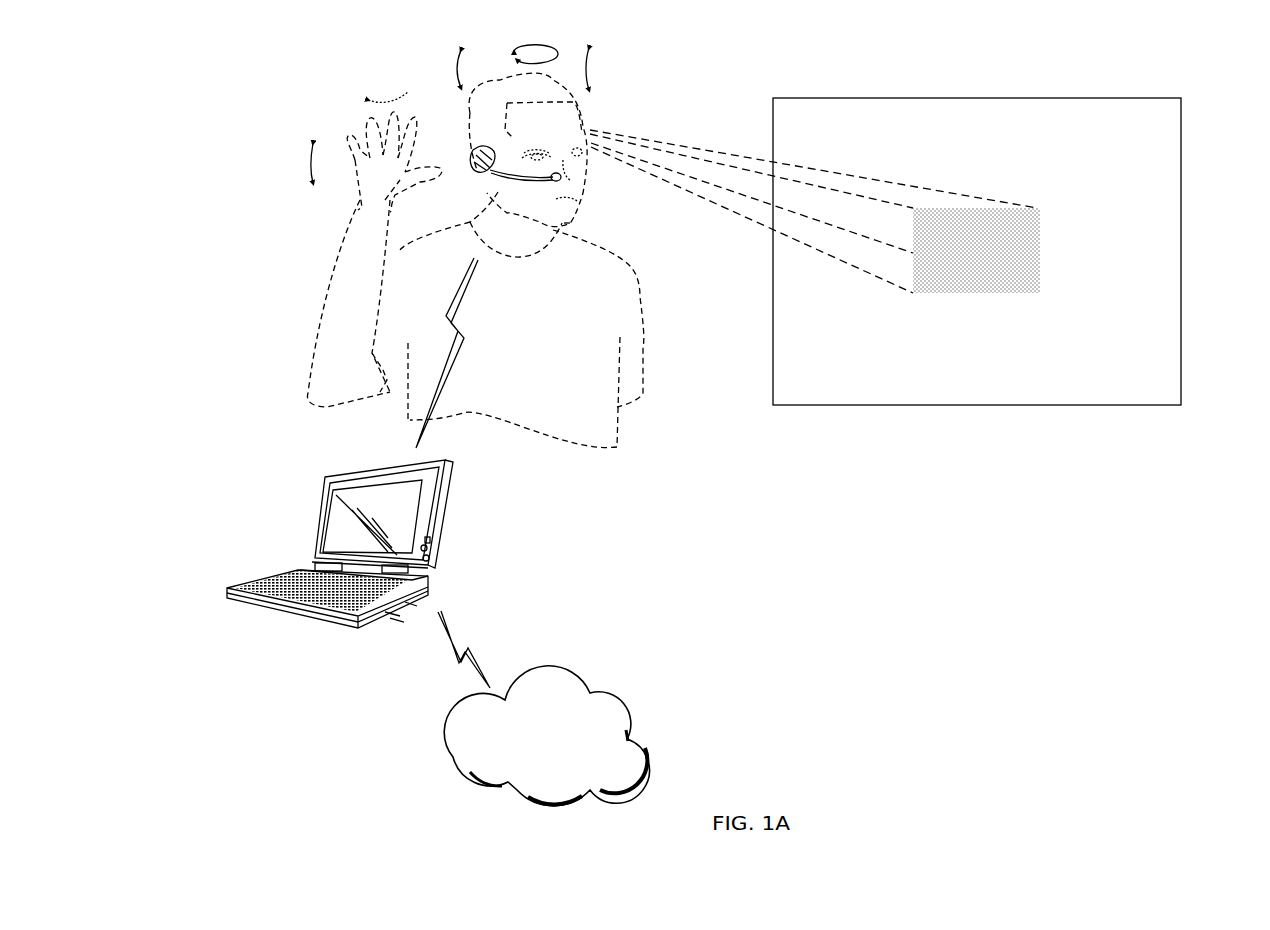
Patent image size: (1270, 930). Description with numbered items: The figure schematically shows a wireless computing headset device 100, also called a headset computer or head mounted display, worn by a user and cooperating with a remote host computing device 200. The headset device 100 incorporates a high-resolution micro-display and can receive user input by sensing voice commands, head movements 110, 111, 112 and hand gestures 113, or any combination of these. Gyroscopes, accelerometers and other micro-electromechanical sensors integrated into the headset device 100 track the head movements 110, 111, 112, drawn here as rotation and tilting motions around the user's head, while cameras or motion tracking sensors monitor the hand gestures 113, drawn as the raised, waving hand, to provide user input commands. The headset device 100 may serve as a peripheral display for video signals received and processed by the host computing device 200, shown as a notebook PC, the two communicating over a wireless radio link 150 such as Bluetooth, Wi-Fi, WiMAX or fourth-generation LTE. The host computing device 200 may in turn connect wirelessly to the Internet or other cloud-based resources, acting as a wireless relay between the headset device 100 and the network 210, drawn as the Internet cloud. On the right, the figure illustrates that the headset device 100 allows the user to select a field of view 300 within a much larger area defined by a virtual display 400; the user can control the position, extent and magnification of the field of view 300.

The wireless computing headset device 100 is at (502, 180).
The head movement 110 is at (516, 55).
The head movement 111 is at (592, 73).
The head movement 112 is at (457, 73).
The hand gestures 113 is at (310, 163).
The wireless radio link 150 is at (441, 380).
The host computing device 200 is at (445, 512).
The network 210 is at (631, 722).
The field of view 300 is at (1040, 248).
The virtual display 400 is at (860, 405).